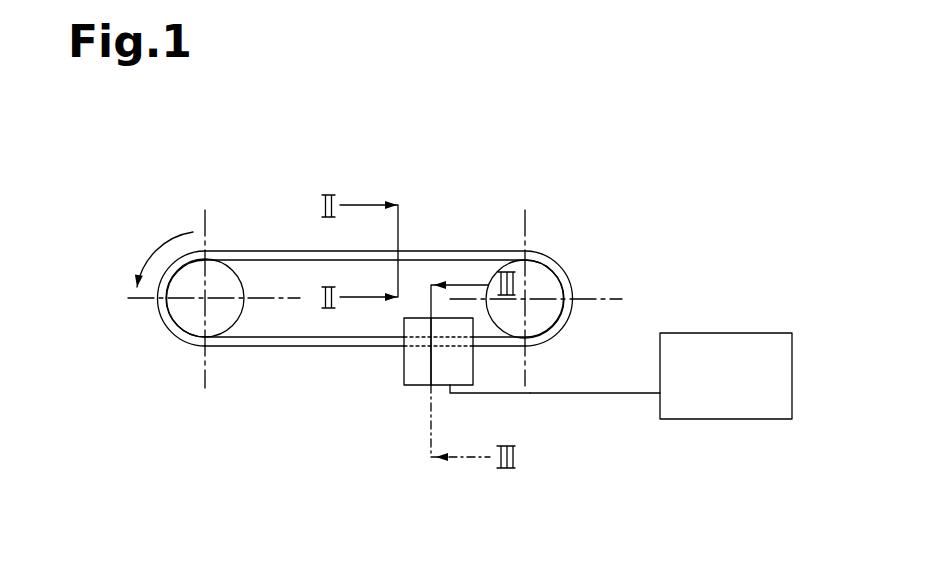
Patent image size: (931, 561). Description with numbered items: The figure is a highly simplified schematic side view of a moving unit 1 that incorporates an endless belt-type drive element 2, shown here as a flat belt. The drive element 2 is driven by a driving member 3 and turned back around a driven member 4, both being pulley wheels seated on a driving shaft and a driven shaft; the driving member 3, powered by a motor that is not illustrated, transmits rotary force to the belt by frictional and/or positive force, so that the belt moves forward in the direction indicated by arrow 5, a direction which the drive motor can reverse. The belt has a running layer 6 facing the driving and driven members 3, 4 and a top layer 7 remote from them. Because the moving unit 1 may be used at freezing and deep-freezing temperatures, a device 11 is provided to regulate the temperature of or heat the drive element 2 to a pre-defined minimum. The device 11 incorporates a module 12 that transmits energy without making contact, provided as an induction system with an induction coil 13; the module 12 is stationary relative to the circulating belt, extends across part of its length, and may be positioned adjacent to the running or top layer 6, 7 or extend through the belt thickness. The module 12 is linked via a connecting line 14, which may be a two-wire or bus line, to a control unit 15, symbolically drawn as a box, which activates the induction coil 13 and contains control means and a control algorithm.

The moving unit 1 is at (432, 147).
The drive element 2 is at (270, 240).
The driving member 3 is at (178, 327).
The driven member 4 is at (552, 318).
The arrow 5 is at (152, 258).
The running layer 6 is at (266, 323).
The top layer 7 is at (270, 360).
The device 11 is at (397, 378).
The module 12 is at (462, 407).
The induction coil 13 is at (417, 377).
The connecting line 14 is at (588, 395).
The control unit 15 is at (725, 410).